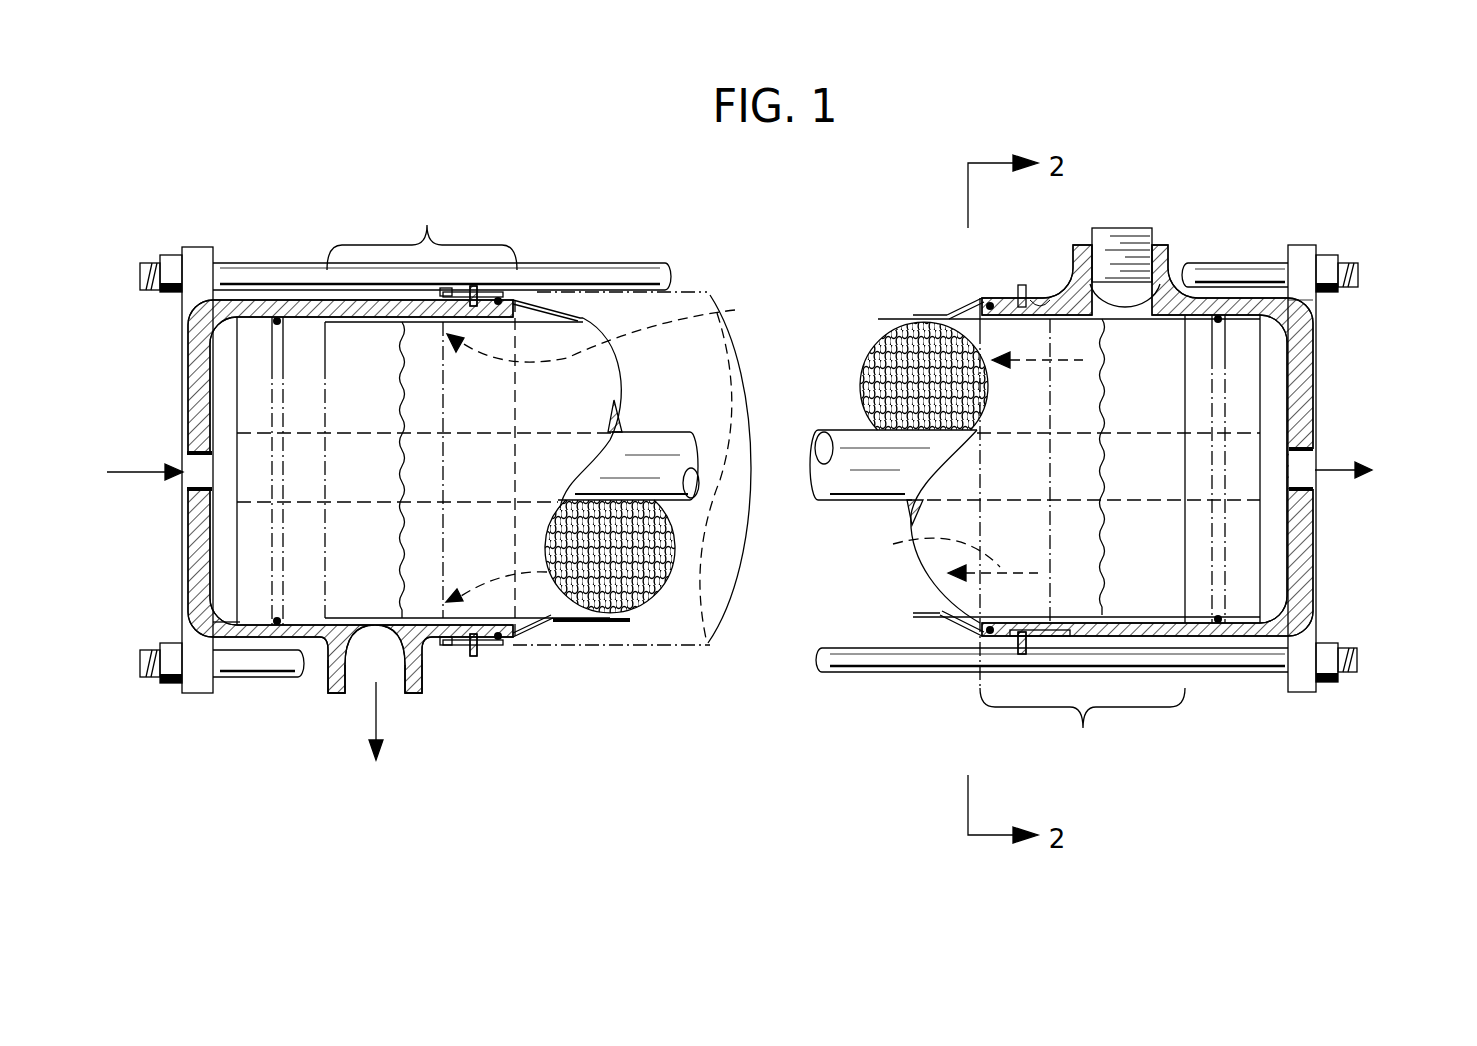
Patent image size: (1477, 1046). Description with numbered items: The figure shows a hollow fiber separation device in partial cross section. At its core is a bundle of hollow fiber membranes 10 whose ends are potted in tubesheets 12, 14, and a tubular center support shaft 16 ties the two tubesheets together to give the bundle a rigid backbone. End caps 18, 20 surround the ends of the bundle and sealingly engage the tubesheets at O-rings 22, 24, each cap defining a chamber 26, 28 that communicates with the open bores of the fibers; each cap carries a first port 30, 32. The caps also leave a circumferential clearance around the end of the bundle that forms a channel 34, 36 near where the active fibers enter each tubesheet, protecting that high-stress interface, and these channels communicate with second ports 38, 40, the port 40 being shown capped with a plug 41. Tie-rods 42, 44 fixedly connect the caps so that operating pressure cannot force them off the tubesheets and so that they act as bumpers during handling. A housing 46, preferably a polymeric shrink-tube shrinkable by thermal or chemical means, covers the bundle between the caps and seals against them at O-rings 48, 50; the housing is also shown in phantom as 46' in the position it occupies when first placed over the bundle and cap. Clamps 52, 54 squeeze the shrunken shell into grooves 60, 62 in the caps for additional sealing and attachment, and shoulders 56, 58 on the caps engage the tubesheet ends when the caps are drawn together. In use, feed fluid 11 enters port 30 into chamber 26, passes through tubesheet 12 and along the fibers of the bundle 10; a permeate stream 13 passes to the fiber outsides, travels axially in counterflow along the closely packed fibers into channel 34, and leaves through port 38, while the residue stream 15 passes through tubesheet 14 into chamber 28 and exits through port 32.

The bundle of hollow fiber membranes 10 is at (677, 556).
The feed fluid 11 is at (140, 470).
The tubesheet 12 is at (322, 572).
The permeate stream 13 is at (380, 727).
The tubesheet 14 is at (1172, 572).
The residue stream 15 is at (1330, 478).
The tubular center support shaft 16 is at (845, 430).
The end cap 18 is at (183, 565).
The end cap 20 is at (1312, 577).
The O-ring 22 is at (277, 300).
The O-ring 24 is at (1218, 316).
The chamber 26 is at (220, 378).
The chamber 28 is at (1305, 385).
The port 30 is at (187, 475).
The port 32 is at (1315, 470).
The channel 34 is at (422, 230).
The channel 36 is at (1082, 731).
The second port 38 is at (362, 693).
The second port 40 is at (1176, 298).
The plug 41 is at (1128, 228).
The tie-rod 42 is at (655, 263).
The tie-rod 44 is at (900, 677).
The housing 46 is at (571, 497).
The impermeable housing in phantom 46' is at (679, 500).
The O-ring 48 is at (495, 642).
The O-ring 50 is at (985, 298).
The clamp 52 is at (473, 656).
The clamp 54 is at (1020, 285).
The shoulder 56 is at (233, 622).
The shoulder 58 is at (1297, 318).
The groove 60 is at (445, 640).
The groove 62 is at (1030, 300).